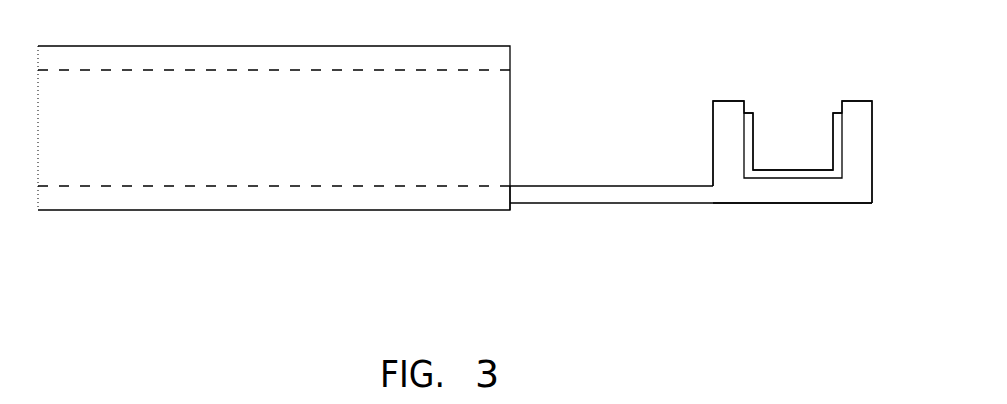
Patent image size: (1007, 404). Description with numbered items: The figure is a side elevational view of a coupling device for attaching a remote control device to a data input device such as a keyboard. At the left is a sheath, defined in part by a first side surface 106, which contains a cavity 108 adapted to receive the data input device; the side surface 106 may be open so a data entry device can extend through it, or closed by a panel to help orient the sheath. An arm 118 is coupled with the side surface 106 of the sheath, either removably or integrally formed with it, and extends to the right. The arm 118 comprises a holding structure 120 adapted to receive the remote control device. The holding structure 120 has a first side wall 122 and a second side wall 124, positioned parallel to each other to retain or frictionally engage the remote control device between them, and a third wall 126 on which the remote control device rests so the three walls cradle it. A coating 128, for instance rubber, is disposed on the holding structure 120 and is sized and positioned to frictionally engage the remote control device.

The first side surface 106 is at (513, 203).
The cavity 108 is at (505, 93).
The arm 118 is at (603, 203).
The holding structure 120 is at (717, 275).
The first side wall 122 is at (713, 113).
The second side wall 124 is at (873, 132).
The third wall 126 is at (792, 193).
The coating 128 is at (755, 120).